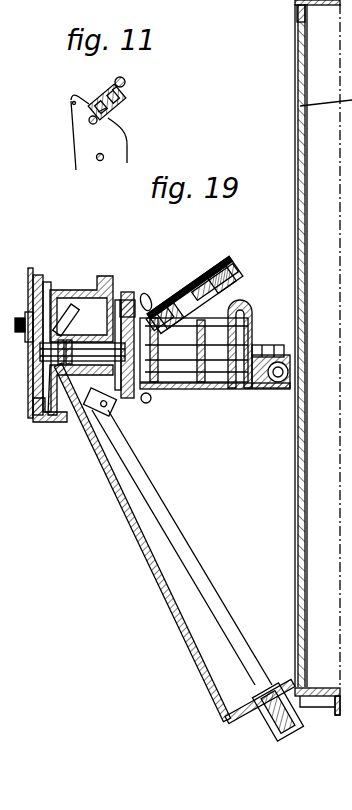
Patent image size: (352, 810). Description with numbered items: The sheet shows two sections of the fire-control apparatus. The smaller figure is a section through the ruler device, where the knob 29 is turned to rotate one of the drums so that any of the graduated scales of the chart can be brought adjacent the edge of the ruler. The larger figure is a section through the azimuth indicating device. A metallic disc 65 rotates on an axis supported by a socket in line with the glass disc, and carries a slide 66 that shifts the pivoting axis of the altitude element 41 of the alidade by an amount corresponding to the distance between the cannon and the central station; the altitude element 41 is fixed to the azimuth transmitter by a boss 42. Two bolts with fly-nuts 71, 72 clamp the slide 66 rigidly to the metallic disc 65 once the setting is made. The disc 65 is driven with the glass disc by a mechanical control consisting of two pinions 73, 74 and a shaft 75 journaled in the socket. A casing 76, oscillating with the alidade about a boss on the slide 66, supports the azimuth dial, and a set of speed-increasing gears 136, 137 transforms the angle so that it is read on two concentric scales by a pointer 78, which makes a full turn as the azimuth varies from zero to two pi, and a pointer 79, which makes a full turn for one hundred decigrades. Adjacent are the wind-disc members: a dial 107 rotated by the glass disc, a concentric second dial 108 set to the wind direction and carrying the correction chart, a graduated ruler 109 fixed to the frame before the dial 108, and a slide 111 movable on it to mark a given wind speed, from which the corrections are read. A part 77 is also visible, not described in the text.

In FIG. 11, the knob 29 is at (125, 101).
In FIG. 19, the altitude element 41 is at (279, 384).
In FIG. 19, the boss 42 is at (236, 386).
In FIG. 19, the metallic disc 65 is at (100, 300).
In FIG. 19, the slide 66 is at (148, 403).
In FIG. 19, the bolt with fly-nut 71 is at (143, 295).
In FIG. 19, the bolt with fly-nut 72 is at (128, 402).
In FIG. 19, the pinion 73 is at (97, 430).
In FIG. 19, the pinion 74 is at (230, 716).
In FIG. 19, the shaft 75 is at (192, 582).
In FIG. 19, the casing 76 is at (200, 386).
In FIG. 19, the lever 77 is at (170, 305).
In FIG. 19, the pointer 78 is at (203, 285).
In FIG. 19, the pointer 79 is at (218, 288).
In FIG. 19, the dial 107 is at (46, 290).
In FIG. 19, the second dial 108 is at (34, 408).
In FIG. 19, the graduated ruler 109 is at (28, 270).
In FIG. 19, the slide 111 is at (58, 330).
In FIG. 19, the speed-increasing gear 136 is at (204, 386).
In FIG. 19, the speed-increasing gear 137 is at (216, 302).